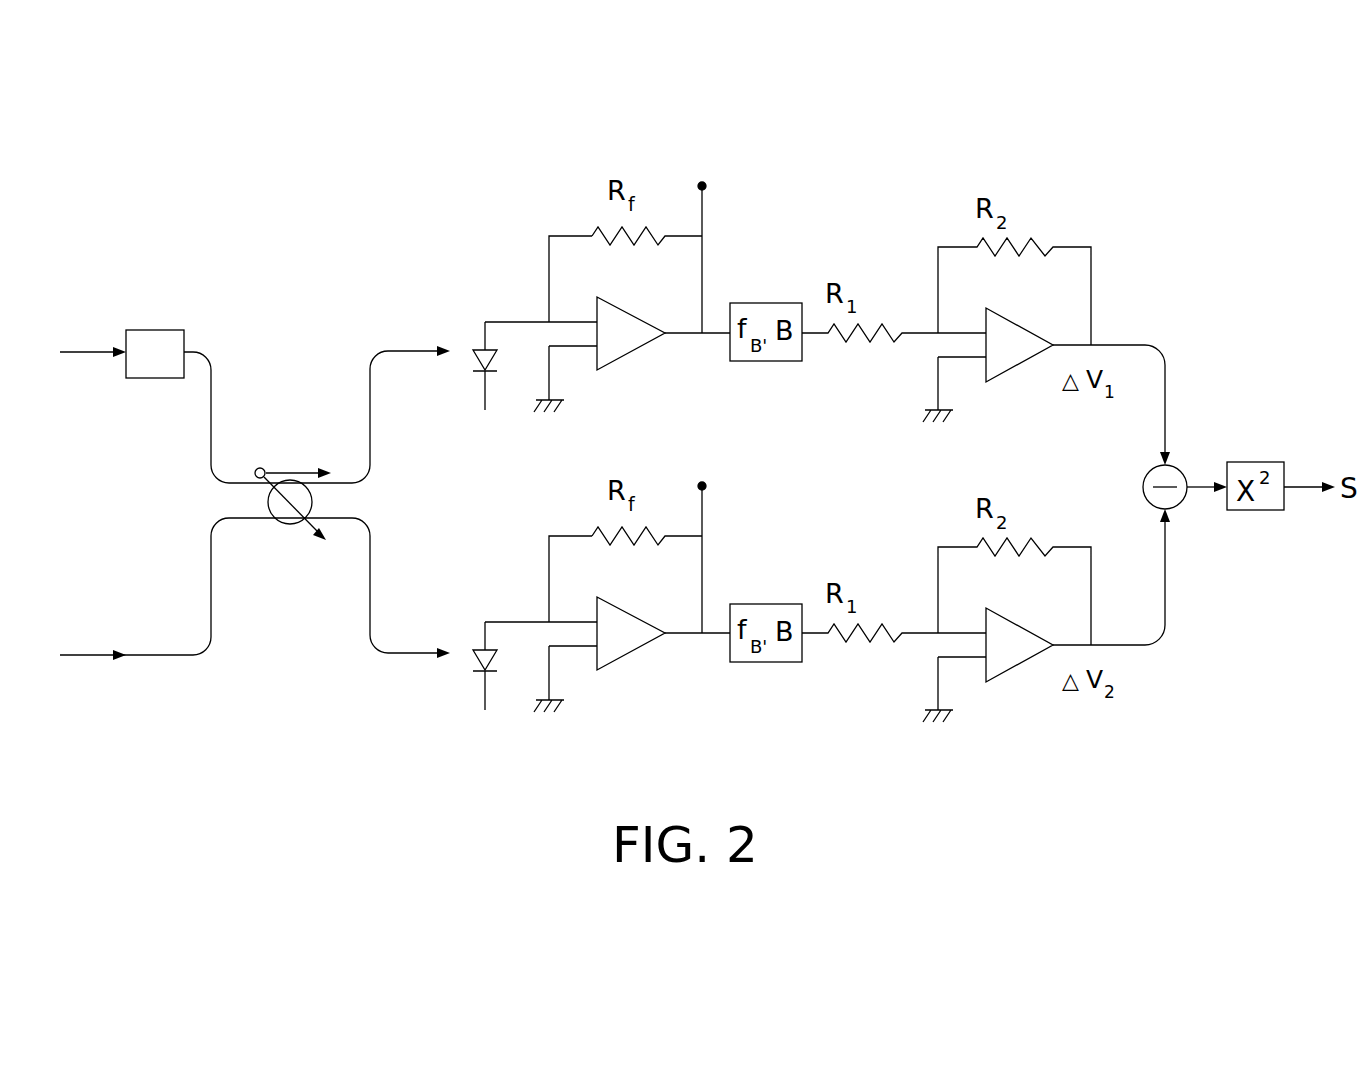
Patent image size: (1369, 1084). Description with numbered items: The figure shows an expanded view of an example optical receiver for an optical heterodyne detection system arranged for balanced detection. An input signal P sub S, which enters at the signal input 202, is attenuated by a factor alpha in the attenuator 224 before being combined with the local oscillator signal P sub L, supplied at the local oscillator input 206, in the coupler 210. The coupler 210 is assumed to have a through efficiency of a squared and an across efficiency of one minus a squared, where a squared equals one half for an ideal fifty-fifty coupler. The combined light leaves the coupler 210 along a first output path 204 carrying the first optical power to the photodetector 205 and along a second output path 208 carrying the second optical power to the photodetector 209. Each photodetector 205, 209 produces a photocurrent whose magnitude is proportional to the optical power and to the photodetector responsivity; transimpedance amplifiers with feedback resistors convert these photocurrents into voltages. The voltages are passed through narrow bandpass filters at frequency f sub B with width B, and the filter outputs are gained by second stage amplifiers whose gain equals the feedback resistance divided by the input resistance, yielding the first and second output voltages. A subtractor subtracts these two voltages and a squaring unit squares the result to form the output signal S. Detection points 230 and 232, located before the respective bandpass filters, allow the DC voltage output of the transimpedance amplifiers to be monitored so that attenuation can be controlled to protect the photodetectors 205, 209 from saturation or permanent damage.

The signal light input P_S 202 is at (90, 354).
The first coupler output waveguide P1 204 is at (368, 417).
The photodetector 205 is at (473, 356).
The local oscillator light input P_L 206 is at (88, 657).
The second coupler output waveguide P2 208 is at (370, 585).
The photodetector 209 is at (475, 656).
The coupler 210 is at (313, 500).
The attenuator 224 is at (155, 329).
The detection point 230 is at (706, 186).
The detection point 232 is at (706, 486).